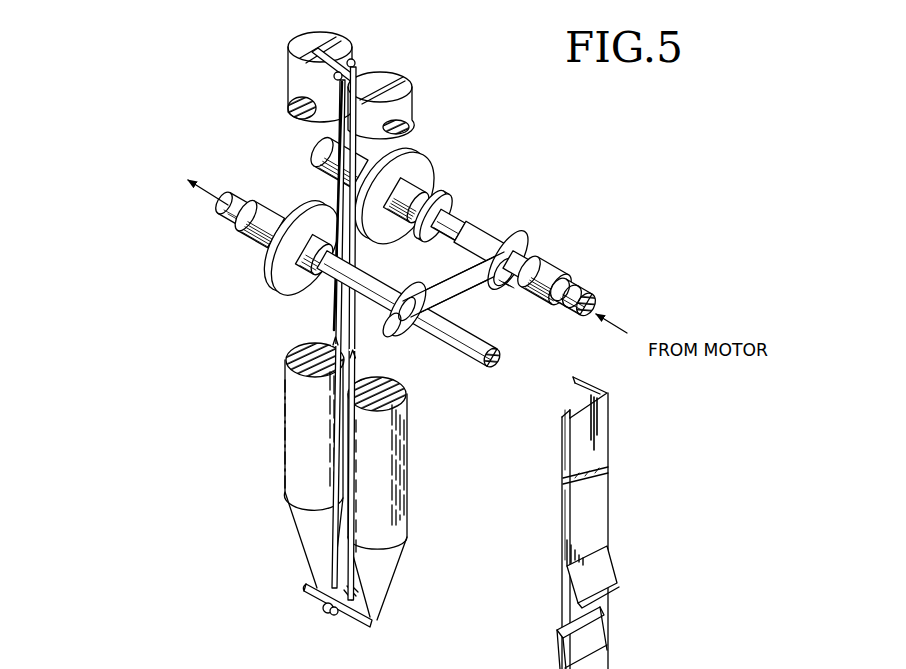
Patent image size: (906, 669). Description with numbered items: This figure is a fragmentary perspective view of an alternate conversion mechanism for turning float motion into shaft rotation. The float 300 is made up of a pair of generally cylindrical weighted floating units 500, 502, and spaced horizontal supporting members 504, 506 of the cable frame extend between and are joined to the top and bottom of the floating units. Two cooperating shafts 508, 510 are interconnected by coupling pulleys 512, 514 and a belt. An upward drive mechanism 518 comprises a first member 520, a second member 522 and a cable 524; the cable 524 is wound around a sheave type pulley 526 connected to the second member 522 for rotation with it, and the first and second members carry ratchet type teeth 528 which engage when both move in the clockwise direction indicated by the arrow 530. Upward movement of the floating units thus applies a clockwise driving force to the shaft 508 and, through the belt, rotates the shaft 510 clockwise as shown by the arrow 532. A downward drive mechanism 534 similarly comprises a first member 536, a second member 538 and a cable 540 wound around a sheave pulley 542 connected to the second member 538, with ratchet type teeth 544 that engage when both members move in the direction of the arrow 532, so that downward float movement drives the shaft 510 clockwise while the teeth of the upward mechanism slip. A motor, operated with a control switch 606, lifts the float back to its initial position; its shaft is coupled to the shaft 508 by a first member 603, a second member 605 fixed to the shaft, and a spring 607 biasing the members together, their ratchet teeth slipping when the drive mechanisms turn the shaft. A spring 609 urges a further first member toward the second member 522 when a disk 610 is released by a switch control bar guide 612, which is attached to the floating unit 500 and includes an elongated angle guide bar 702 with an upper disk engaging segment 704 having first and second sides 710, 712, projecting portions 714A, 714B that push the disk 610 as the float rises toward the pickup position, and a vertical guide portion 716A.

The float 300 is at (285, 424).
The floating unit 500 is at (412, 479).
The floating unit 502 is at (289, 465).
The horizontal supporting member 504 is at (343, 76).
The horizontal supporting member 506 is at (360, 620).
The shaft 508 is at (480, 242).
The shaft 510 is at (322, 282).
The coupling pulley 512 is at (514, 250).
The coupling pulley 514 is at (402, 340).
The upward drive mechanism 518 is at (480, 138).
The first member 520 is at (316, 150).
The second member 522 is at (416, 187).
The cable 524 is at (380, 356).
The sheave type pulley 526 is at (408, 167).
The ratchet type teeth 528 is at (403, 174).
The arrow 530 is at (478, 216).
The arrow 532 is at (360, 258).
The downward drive mechanism 534 is at (228, 233).
The first member 536 is at (242, 236).
The second member 538 is at (268, 253).
The cable 540 is at (334, 327).
The sheave pulley 542 is at (286, 240).
The ratchet type teeth 544 is at (285, 215).
The first member 603 is at (562, 272).
The second member 605 is at (550, 258).
The control switch 606 is at (566, 163).
The spring 607 is at (562, 316).
The spring 609 is at (441, 238).
The disk 610 is at (441, 205).
The switch control bar guide 612 is at (748, 667).
The elongated angle guide bar 702 is at (581, 380).
The upper disk engaging segment 704 is at (604, 523).
The first side 710 is at (581, 513).
The second side 712 is at (560, 412).
The projecting portion 714A is at (587, 574).
The projecting portion 714B is at (557, 634).
The vertical guide portion 716A is at (566, 568).